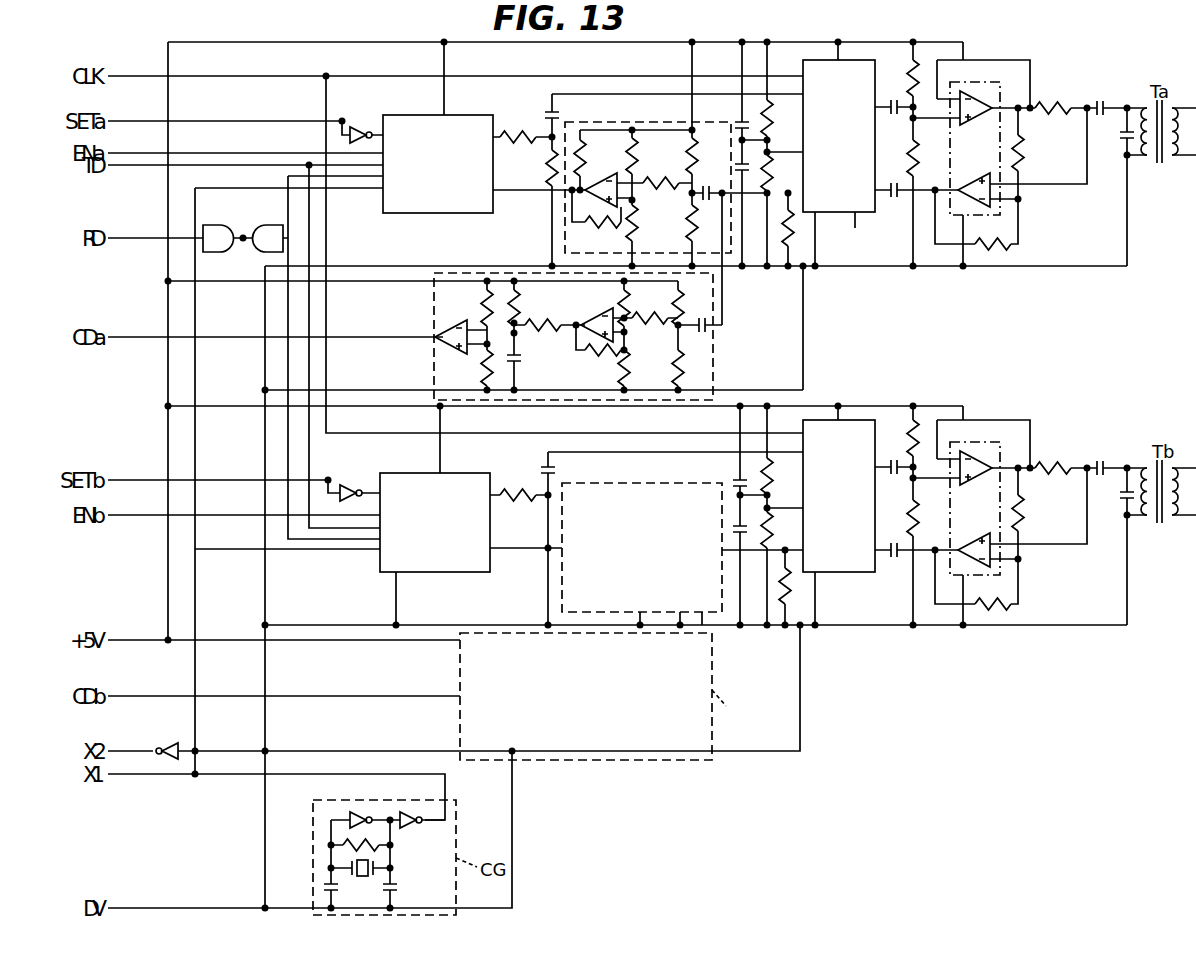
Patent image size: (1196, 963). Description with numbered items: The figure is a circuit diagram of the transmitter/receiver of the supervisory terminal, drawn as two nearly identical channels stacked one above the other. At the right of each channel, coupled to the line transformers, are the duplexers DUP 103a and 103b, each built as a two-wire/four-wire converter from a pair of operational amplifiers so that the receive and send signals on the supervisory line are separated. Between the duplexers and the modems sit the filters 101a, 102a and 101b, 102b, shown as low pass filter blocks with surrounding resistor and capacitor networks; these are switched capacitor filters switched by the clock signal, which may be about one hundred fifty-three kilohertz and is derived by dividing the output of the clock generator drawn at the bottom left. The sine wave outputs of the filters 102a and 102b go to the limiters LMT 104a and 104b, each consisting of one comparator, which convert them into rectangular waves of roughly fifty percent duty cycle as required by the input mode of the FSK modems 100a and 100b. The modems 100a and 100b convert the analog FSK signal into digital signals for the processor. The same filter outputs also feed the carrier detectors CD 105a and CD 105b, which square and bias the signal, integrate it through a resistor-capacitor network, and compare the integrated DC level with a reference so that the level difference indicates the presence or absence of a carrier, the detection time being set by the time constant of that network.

The FSK modem 100a is at (447, 213).
The limiter 104a is at (602, 106).
The carrier detector 105a is at (714, 333).
The filter 101a is at (805, 59).
The filter 102a is at (902, 141).
The duplexer 103a is at (1000, 212).
The FSK modem 100b is at (448, 572).
The limiter 104b is at (640, 482).
The carrier detector 105b is at (683, 762).
The filter 101b is at (862, 420).
The filter 102b is at (919, 504).
The duplexer 103b is at (1000, 572).